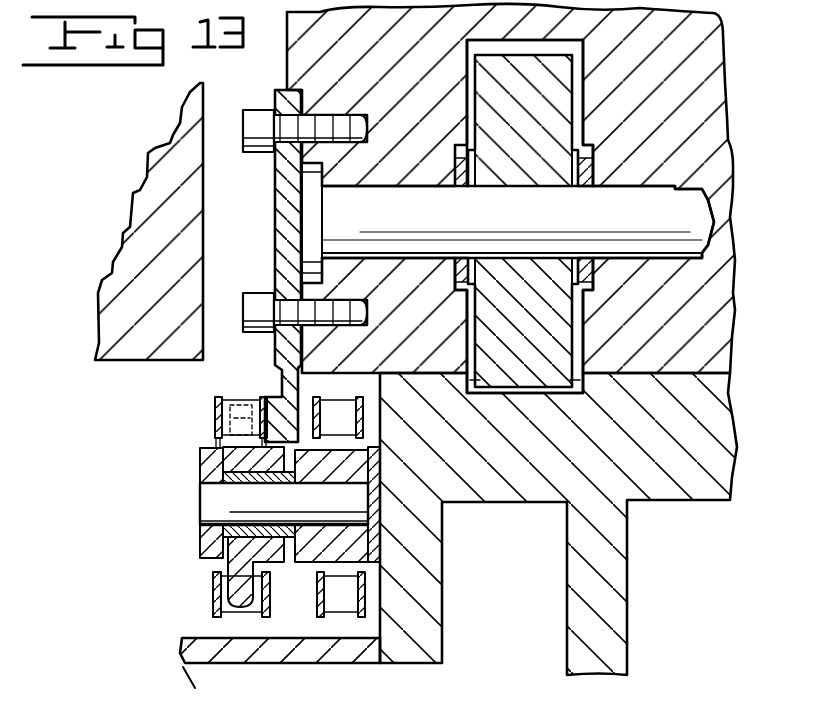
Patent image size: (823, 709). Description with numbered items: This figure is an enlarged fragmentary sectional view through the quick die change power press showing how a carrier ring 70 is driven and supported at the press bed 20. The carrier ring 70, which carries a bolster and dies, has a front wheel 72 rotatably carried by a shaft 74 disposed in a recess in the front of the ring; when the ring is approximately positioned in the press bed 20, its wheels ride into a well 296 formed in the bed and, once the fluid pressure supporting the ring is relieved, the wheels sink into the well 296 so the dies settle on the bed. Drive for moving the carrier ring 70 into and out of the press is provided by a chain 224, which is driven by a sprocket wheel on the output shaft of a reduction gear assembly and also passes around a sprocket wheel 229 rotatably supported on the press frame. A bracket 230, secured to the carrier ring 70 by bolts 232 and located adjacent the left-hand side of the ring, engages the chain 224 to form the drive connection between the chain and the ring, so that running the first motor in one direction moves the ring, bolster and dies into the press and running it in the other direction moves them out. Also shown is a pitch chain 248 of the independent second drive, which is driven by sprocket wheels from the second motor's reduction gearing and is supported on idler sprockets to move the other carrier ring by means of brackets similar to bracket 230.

The press bed 20 is at (528, 478).
The carrier ring 70 is at (352, 357).
The front wheels 72 is at (560, 353).
The shafts 74 is at (627, 185).
The chain 224 is at (213, 412).
The sprocket wheel 229 is at (232, 580).
The bracket 230 is at (285, 192).
The bolts 232 is at (246, 109).
The pitch chain 248 is at (363, 430).
The wells 296 is at (585, 392).